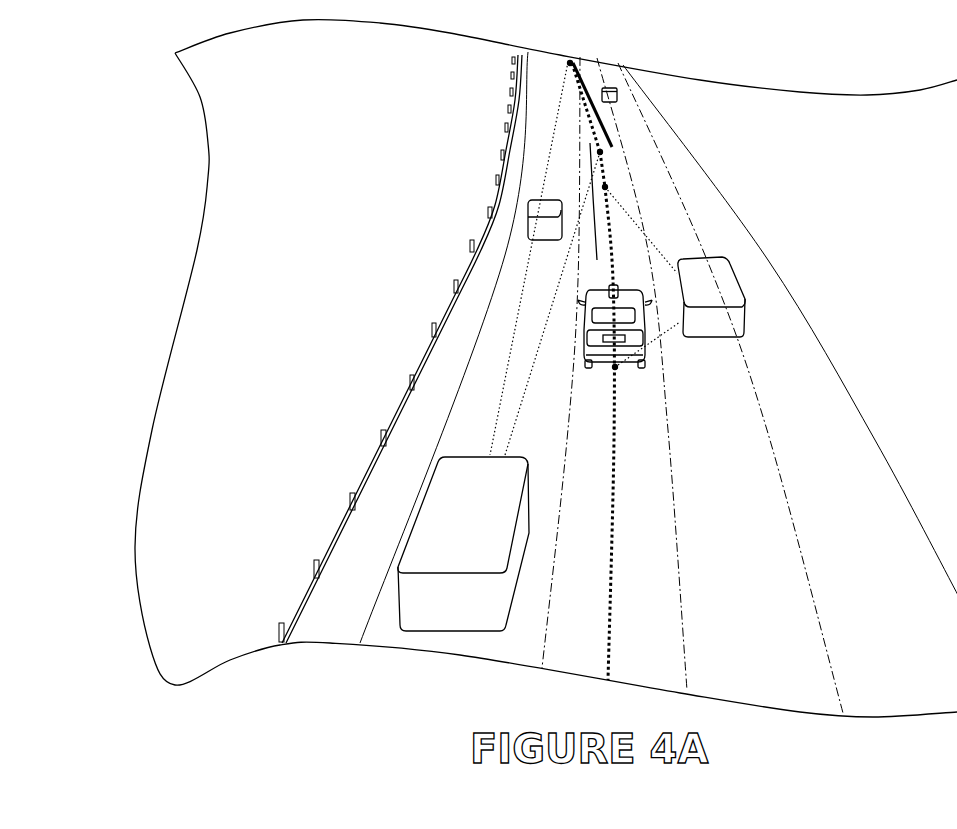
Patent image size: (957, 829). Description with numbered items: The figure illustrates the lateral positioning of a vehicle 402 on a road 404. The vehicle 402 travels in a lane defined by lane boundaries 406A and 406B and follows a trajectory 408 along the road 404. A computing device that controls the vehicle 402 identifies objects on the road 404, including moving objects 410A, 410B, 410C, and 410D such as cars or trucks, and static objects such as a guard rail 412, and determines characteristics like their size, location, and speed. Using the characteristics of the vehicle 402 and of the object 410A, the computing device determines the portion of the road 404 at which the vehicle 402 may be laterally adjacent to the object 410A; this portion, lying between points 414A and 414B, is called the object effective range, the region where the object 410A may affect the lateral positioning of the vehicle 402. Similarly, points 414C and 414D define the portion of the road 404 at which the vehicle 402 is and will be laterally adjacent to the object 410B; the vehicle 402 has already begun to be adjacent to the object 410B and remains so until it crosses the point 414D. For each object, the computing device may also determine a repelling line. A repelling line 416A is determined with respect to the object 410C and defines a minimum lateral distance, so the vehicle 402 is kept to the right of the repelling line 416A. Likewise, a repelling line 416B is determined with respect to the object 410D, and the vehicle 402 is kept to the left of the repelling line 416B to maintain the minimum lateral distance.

The vehicle 402 is at (585, 338).
The road 404 is at (896, 632).
The lane boundary 406A is at (680, 575).
The lane boundary 406B is at (555, 555).
The trajectory 408 is at (613, 480).
The moving object 410A is at (470, 632).
The moving object 410B is at (744, 325).
The moving object 410C is at (528, 220).
The moving object 410D is at (617, 93).
The guard rail 412 is at (483, 208).
The point 414A is at (601, 152).
The point 414B is at (571, 62).
The point 414C is at (616, 368).
The point 414D is at (606, 187).
The repelling line 416A is at (592, 163).
The repelling line 416B is at (607, 125).